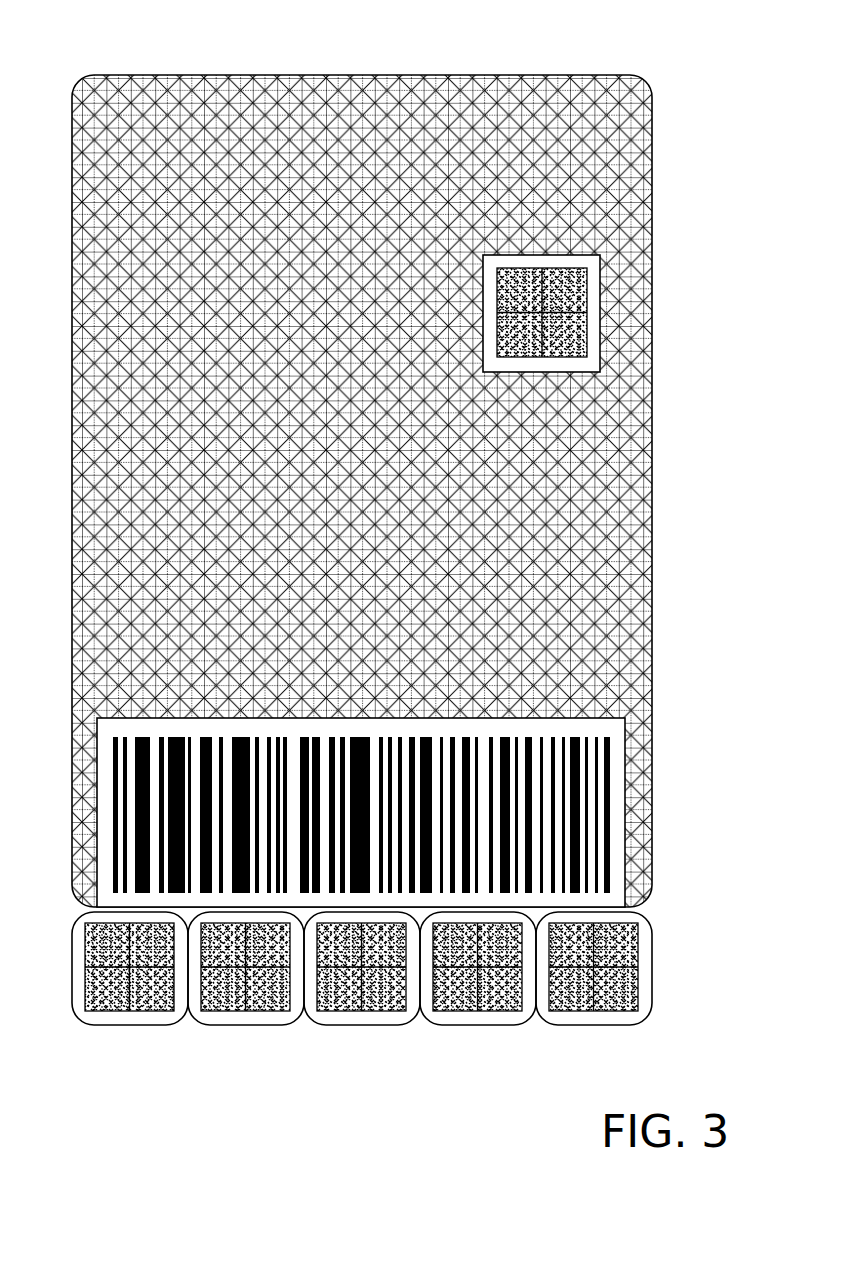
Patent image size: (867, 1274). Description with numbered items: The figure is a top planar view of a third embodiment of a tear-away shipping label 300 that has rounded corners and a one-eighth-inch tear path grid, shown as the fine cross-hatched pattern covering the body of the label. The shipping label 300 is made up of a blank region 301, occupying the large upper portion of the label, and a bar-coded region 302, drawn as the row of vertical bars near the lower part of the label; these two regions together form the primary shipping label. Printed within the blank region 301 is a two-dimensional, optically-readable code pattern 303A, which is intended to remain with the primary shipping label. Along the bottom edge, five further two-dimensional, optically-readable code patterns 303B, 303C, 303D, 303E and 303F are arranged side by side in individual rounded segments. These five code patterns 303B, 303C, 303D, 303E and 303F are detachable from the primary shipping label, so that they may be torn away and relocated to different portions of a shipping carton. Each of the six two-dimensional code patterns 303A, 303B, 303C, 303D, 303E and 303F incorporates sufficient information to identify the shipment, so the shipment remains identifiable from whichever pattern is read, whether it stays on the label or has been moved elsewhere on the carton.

The shipping label 300 is at (382, 50).
The blank region 301 is at (583, 480).
The bar-coded region 302 is at (614, 793).
The two-dimensional, optically-readable code pattern 303A is at (586, 301).
The two-dimensional, optically-readable code pattern 303B is at (118, 1013).
The two-dimensional, optically-readable code pattern 303C is at (232, 1013).
The two-dimensional, optically-readable code pattern 303D is at (348, 1013).
The two-dimensional, optically-readable code pattern 303E is at (465, 1013).
The two-dimensional, optically-readable code pattern 303F is at (580, 1013).